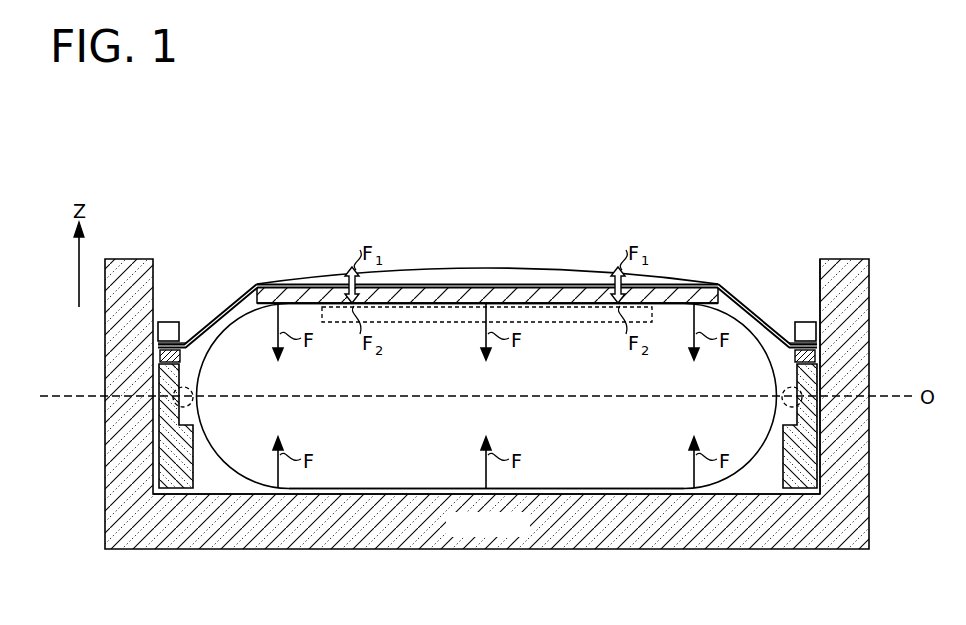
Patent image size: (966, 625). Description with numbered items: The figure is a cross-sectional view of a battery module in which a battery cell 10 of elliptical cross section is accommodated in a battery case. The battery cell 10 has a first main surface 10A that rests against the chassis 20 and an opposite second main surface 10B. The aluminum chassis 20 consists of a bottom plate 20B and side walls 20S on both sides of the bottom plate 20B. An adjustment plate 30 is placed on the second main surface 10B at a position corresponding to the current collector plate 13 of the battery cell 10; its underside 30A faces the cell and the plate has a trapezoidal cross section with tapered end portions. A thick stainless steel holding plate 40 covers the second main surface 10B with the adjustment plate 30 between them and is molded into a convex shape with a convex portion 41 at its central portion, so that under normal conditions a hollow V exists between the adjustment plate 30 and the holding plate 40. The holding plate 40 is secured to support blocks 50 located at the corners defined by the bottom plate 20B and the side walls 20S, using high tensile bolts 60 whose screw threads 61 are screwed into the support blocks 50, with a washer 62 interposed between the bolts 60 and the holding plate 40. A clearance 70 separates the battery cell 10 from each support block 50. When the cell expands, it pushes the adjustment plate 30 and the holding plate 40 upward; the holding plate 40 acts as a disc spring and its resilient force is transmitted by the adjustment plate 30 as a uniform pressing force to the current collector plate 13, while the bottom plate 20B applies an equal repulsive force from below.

The battery cell 10 is at (667, 345).
The first main surface 10A is at (548, 489).
The second main surface 10B is at (573, 309).
The current collector plate 13 is at (395, 318).
The chassis 20 is at (128, 487).
The side walls 20S is at (855, 487).
The bottom plate 20B is at (667, 518).
The adjustment plate 30 is at (305, 294).
The lower surface of pressing plate 30A is at (445, 302).
The holding plate 40 is at (240, 293).
The convex portion 41 is at (487, 275).
The hollow V is at (503, 281).
The support block 50 is at (165, 440).
The bolt 60 is at (168, 321).
The screw thread 61 is at (165, 353).
The washer 62 is at (160, 342).
The clearance 70 is at (172, 397).